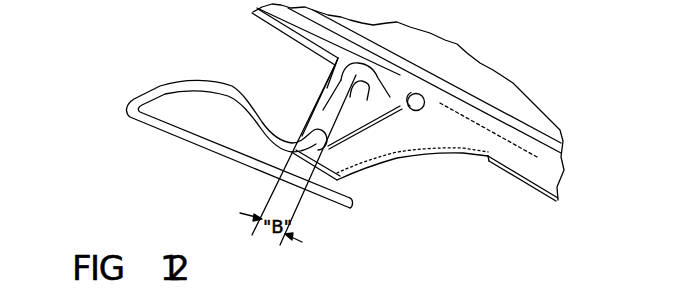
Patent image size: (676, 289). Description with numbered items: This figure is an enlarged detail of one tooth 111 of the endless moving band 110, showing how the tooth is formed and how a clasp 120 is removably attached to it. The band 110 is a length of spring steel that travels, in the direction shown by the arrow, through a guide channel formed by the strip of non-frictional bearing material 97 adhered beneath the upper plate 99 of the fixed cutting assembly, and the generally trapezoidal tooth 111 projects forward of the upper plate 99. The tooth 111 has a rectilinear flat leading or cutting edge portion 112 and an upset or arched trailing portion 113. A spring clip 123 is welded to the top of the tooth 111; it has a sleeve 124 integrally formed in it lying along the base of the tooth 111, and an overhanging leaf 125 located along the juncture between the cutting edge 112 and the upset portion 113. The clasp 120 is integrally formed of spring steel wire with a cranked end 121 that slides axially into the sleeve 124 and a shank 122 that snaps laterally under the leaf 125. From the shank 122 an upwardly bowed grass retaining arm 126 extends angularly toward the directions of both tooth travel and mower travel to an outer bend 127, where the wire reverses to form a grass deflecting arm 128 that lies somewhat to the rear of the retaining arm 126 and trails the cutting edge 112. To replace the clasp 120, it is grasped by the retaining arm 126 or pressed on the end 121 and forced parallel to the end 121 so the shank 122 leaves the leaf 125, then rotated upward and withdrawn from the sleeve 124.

The upper plate 99 is at (495, 75).
The strip of non-frictional bearing material 97 is at (557, 163).
The endless moving band 110 is at (557, 183).
The tooth 111 is at (496, 147).
The cutting edge portion 112 is at (330, 88).
The upset trailing portion 113 is at (373, 162).
The clasp 120 is at (155, 143).
The cranked end 121 is at (419, 111).
The shank 122 is at (330, 65).
The spring clip 123 is at (376, 118).
The sleeve 124 is at (388, 78).
The overhanging leaf 125 is at (327, 115).
The grass retaining arm 126 is at (211, 79).
The outer bend 127 is at (126, 108).
The grass deflecting arm 128 is at (337, 208).